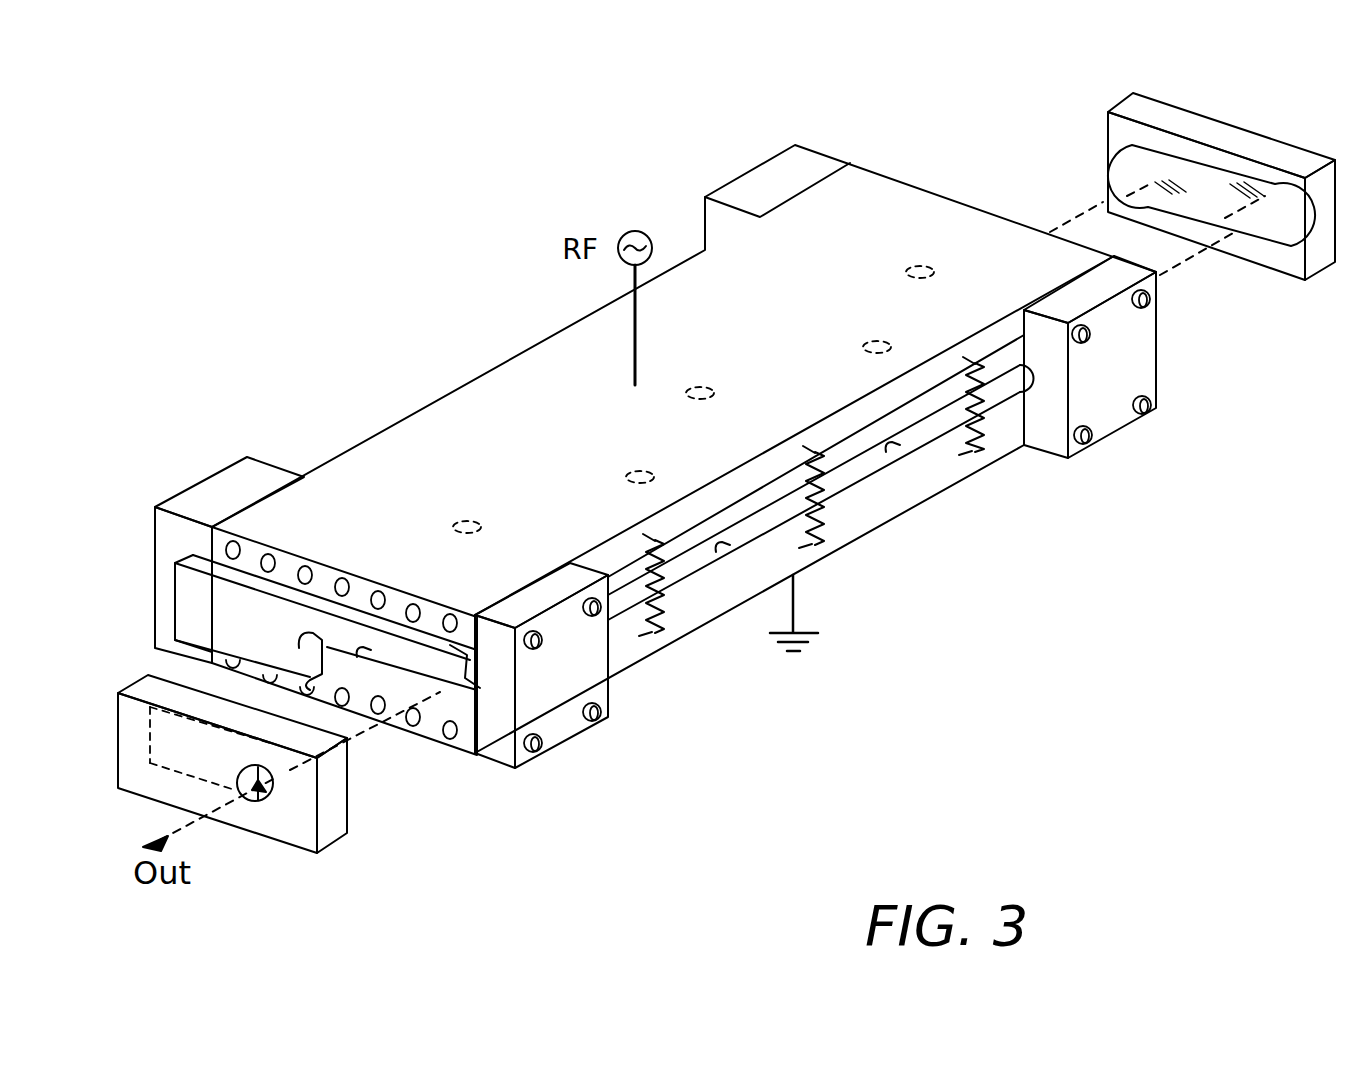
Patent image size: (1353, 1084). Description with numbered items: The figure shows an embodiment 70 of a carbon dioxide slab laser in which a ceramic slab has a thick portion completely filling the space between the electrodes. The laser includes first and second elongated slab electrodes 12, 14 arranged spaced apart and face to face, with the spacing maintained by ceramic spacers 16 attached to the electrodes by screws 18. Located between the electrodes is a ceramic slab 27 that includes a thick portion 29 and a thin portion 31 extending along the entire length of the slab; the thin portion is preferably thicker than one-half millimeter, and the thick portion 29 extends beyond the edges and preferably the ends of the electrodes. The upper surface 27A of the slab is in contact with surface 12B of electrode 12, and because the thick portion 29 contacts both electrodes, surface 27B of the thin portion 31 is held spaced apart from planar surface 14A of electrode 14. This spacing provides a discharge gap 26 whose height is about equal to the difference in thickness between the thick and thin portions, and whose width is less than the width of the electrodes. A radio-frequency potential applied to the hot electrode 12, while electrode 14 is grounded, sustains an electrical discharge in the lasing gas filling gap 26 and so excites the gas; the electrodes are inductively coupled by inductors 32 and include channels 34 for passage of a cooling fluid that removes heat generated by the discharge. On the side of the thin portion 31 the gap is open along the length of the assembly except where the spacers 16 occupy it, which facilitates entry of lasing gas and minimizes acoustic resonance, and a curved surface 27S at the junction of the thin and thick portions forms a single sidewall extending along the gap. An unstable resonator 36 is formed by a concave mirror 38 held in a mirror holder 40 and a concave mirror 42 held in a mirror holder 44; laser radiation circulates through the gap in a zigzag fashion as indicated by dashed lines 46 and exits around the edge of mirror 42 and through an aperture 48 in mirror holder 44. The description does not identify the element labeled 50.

The slab electrode 12 is at (520, 353).
The electrode surface 12B is at (398, 640).
The slab electrode 14 is at (808, 566).
The electrode surface 14A is at (428, 655).
The ceramic spacers 16 is at (575, 735).
The screws 18 is at (603, 718).
The discharge gap 26 is at (728, 553).
The ceramic slab 27 is at (176, 584).
The upper slab surface 27A is at (453, 667).
The slab surface 27B is at (393, 647).
The curved surface 27S is at (310, 630).
The thick portion 29 is at (252, 600).
The thin portion 31 is at (453, 663).
The inductors 32 is at (985, 440).
The channels 34 is at (378, 593).
The unstable resonator 36 is at (1158, 256).
The concave mirror 38 is at (1140, 160).
The mirror holder 40 is at (1167, 103).
The concave mirror 42 is at (150, 742).
The mirror holder 44 is at (140, 690).
The dashed lines 46 is at (1100, 200).
The aperture 48 is at (330, 838).
The RF feed point 50 is at (860, 335).
The slab laser embodiment 70 is at (1040, 677).